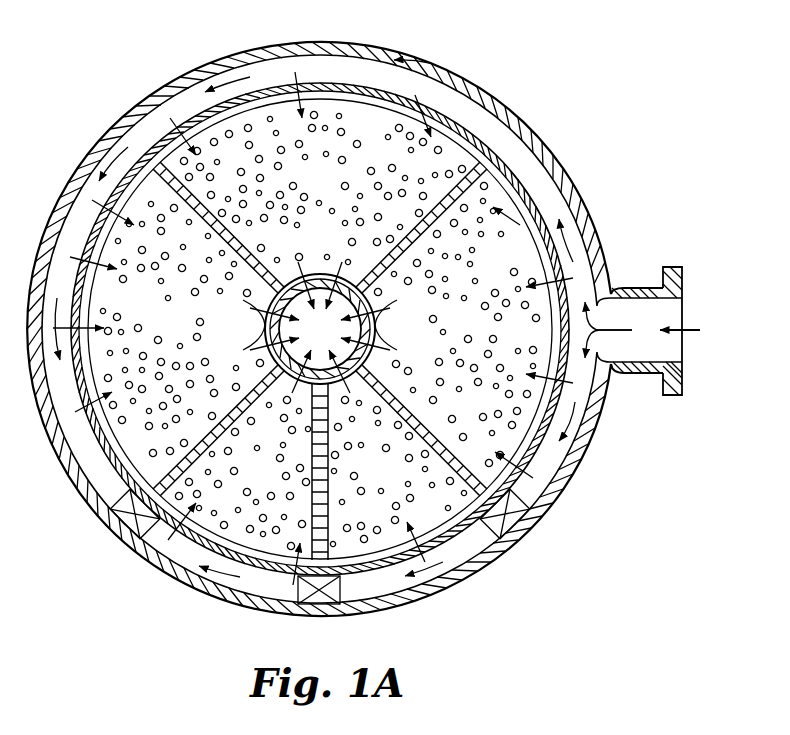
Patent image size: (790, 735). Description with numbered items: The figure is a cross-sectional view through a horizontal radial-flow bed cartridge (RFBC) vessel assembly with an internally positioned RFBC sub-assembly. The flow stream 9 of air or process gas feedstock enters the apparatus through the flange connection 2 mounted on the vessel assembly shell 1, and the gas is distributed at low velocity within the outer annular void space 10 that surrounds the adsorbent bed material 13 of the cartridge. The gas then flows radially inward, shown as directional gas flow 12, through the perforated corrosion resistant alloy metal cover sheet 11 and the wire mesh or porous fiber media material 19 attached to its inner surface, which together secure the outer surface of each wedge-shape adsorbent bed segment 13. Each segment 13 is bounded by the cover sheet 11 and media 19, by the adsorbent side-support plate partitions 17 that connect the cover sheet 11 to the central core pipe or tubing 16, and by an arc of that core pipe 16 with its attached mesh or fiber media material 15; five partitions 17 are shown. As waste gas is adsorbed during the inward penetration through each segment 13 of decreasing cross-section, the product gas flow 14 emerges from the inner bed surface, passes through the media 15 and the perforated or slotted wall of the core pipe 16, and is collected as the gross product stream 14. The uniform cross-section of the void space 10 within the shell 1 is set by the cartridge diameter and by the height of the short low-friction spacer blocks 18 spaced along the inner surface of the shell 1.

The vessel assembly shell 1 is at (549, 161).
The flange connection 2 is at (681, 267).
The flow stream of air or process gas feedstock 9 is at (698, 328).
The outer annular void space 10 is at (568, 197).
The perforated corrosion resistant alloy metal cover sheet 11 is at (549, 260).
The directional gas flow 12 is at (408, 126).
The wedge-shape adsorbent bed segment 13 is at (324, 194).
The product gas flow 14 is at (319, 327).
The corrosion resistant alloy wire mesh or porous fiber media material 15 is at (315, 275).
The central core pipe or tubing 16 is at (289, 282).
The adsorbent side-support plate partition 17 is at (413, 414).
The spacer block 18 is at (151, 538).
The corrosion resistant alloy wire mesh or porous fiber media material 19 is at (560, 338).